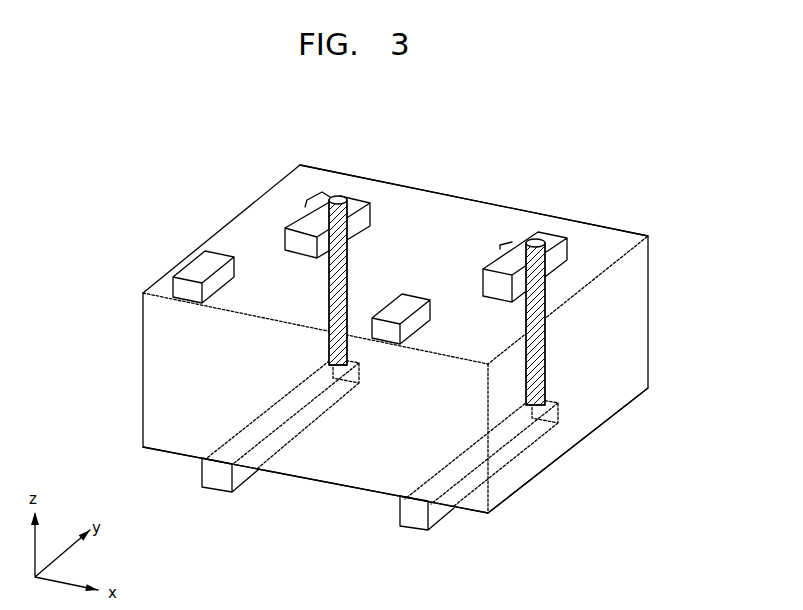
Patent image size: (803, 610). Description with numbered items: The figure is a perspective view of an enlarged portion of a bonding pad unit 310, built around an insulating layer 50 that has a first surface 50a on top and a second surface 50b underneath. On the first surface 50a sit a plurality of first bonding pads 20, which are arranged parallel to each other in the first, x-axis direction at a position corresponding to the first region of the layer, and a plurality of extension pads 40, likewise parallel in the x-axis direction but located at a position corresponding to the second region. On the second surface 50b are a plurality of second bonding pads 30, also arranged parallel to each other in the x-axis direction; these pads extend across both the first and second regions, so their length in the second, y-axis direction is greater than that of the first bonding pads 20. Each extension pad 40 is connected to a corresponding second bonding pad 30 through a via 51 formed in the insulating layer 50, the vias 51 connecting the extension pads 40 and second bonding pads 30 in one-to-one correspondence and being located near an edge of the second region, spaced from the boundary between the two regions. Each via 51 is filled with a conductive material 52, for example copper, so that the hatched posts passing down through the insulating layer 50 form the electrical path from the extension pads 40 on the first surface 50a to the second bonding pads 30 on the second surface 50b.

The bonding pad unit 310 is at (641, 135).
The insulating layer 50 is at (648, 320).
The first surface 50a is at (597, 243).
The second surface 50b is at (588, 416).
The first bonding pads 20 is at (200, 267).
The second bonding pads 30 is at (215, 478).
The extension pads 40 is at (300, 222).
The vias 51 is at (348, 258).
The conductive material 52 is at (337, 195).